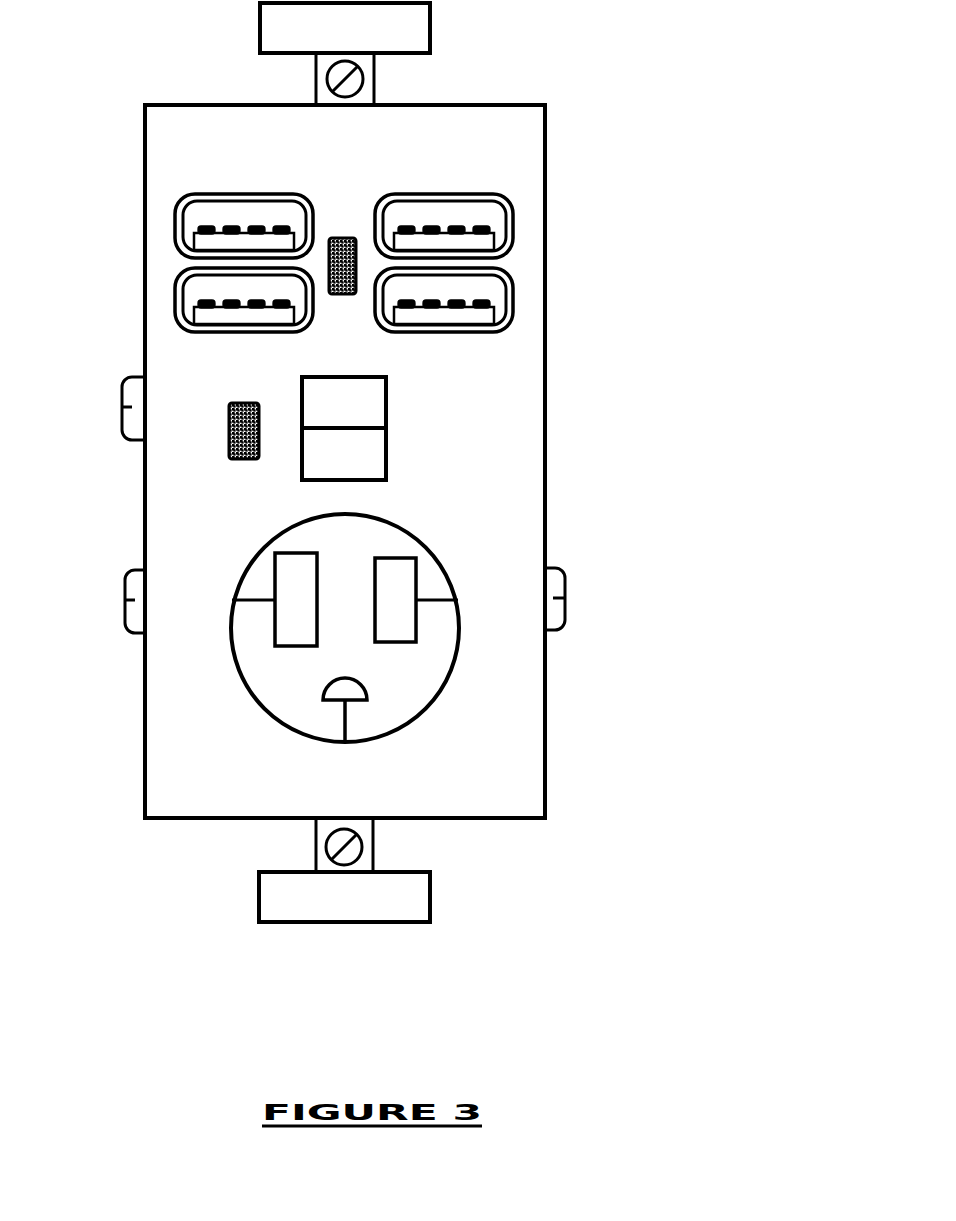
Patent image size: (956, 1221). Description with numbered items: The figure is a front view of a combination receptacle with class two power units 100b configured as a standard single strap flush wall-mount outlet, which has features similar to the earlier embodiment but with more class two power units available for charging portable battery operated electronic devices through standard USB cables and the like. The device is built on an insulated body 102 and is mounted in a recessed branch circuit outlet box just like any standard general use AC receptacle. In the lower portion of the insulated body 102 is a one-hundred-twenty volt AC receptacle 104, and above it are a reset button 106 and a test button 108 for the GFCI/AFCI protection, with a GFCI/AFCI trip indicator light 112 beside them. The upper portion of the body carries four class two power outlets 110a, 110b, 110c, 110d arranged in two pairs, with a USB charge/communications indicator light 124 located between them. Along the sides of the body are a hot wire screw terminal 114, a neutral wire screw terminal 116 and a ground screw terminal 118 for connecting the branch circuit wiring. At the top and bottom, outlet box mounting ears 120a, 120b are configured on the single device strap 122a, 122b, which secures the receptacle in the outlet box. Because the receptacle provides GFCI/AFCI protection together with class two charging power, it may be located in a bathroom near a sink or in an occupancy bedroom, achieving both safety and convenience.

The combination receptacle with class 2 power units 100b is at (485, 972).
The insulated body 102 is at (548, 115).
The 120 VAC receptacle 104 is at (430, 550).
The reset button 106 is at (390, 453).
The test button 108 is at (390, 403).
The class 2 power outlet 110a is at (242, 193).
The class 2 power outlet 110b is at (445, 193).
The class 2 power outlet 110c is at (450, 333).
The class 2 power outlet 110d is at (242, 333).
The GFCI/AFCI trip indicator light 112 is at (243, 462).
The hot wire screw terminal 114 is at (563, 567).
The neutral wire screw terminal 116 is at (127, 573).
The ground screw terminal 118 is at (122, 382).
The outlet box mounting ear 120a is at (432, 897).
The outlet box mounting ear 120b is at (432, 37).
The device strap 122a is at (375, 855).
The device strap 122b is at (376, 86).
The USB charge/communications indicator light 124 is at (340, 237).